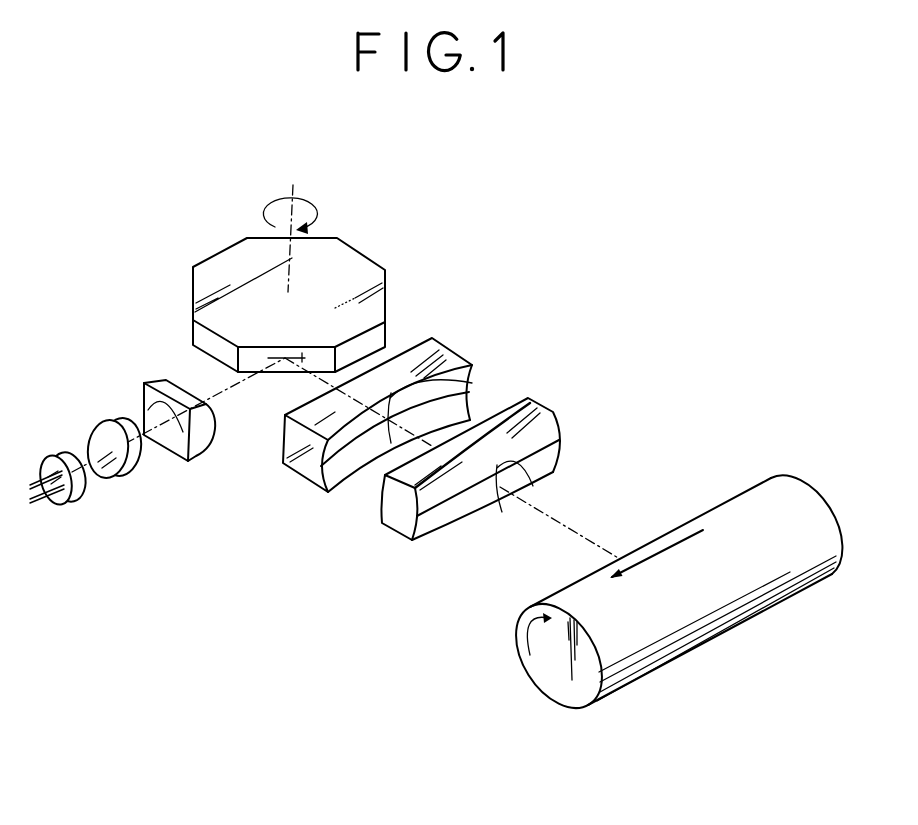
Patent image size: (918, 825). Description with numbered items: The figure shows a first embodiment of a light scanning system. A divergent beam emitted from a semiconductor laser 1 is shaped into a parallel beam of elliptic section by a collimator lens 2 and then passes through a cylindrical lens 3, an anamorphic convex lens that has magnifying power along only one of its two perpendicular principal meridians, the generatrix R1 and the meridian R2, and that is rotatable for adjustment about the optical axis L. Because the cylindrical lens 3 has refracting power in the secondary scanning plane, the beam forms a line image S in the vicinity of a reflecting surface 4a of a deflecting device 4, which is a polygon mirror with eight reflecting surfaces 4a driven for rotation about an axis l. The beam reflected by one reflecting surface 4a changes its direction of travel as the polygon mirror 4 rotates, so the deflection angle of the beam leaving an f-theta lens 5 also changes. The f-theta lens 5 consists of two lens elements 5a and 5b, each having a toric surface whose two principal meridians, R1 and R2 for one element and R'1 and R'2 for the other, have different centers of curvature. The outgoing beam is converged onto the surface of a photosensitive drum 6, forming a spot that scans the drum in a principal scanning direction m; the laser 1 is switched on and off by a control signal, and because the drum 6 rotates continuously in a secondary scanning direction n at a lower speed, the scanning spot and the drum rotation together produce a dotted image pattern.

The semiconductor laser 1 is at (79, 488).
The collimator lens 2 is at (134, 470).
The cylindrical lens 3 is at (195, 450).
The deflecting device 4 is at (308, 272).
The reflecting surface 4a is at (258, 353).
The f-theta lens 5 is at (433, 422).
The first lens element 5a is at (455, 332).
The second lens element 5b is at (481, 460).
The photosensitive drum 6 is at (670, 586).
The optical axis L is at (220, 414).
The line image S is at (307, 346).
The axis l is at (290, 232).
The principal meridian (generatrix) R1 is at (343, 478).
The principal meridian R2 is at (467, 389).
The principal meridian R'1 is at (455, 549).
The principal meridian R'2 is at (561, 493).
The principal scanning direction m is at (656, 554).
The secondary scanning direction n is at (539, 634).